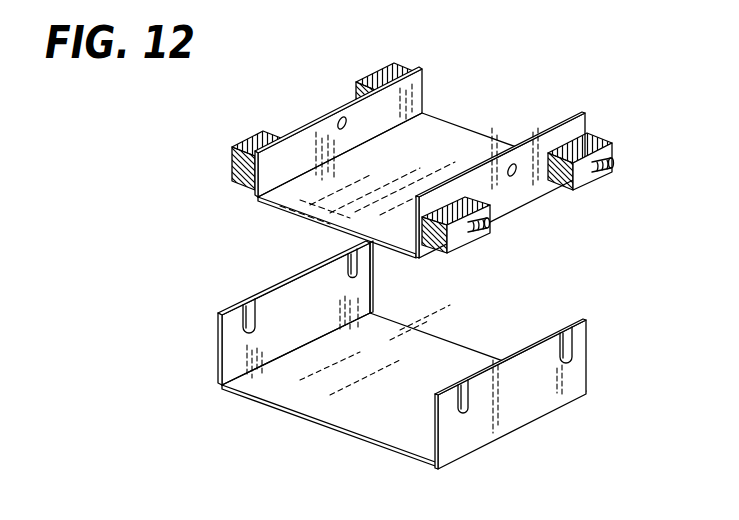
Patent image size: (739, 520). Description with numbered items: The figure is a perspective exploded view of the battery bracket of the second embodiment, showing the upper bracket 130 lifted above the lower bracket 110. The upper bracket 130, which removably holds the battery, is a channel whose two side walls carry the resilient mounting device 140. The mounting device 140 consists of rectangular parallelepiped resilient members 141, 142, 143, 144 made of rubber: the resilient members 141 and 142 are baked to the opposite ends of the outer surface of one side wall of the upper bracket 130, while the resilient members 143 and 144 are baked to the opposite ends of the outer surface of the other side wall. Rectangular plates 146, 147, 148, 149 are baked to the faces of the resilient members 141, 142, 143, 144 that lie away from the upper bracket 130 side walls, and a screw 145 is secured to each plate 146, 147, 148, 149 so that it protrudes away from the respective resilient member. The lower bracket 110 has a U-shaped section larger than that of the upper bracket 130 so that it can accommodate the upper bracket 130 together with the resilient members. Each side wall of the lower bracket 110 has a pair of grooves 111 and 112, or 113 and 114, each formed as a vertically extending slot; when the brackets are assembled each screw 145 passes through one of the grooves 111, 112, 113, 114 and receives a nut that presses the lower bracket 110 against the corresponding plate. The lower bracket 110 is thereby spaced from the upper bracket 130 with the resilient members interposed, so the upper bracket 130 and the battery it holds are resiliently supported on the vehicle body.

The lower bracket 110 is at (426, 369).
The groove 111 is at (567, 340).
The groove 112 is at (471, 414).
The groove 113 is at (256, 323).
The groove 114 is at (354, 279).
The upper bracket 130 is at (432, 168).
The resilient mounting device 140 is at (620, 139).
The resilient member 141 is at (609, 139).
The resilient member 142 is at (485, 250).
The resilient member 143 is at (242, 184).
The resilient member 144 is at (402, 78).
The screw 145 is at (480, 236).
The rectangular plate 146 is at (612, 155).
The rectangular plate 147 is at (488, 220).
The rectangular plate 148 is at (229, 172).
The rectangular plate 149 is at (357, 80).